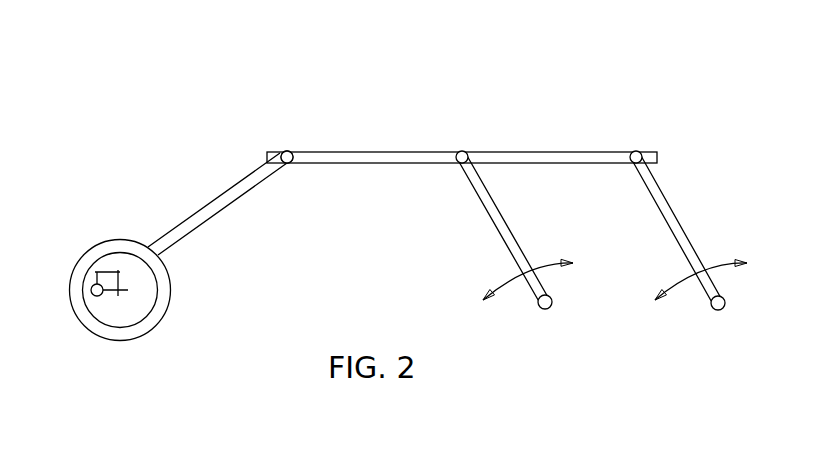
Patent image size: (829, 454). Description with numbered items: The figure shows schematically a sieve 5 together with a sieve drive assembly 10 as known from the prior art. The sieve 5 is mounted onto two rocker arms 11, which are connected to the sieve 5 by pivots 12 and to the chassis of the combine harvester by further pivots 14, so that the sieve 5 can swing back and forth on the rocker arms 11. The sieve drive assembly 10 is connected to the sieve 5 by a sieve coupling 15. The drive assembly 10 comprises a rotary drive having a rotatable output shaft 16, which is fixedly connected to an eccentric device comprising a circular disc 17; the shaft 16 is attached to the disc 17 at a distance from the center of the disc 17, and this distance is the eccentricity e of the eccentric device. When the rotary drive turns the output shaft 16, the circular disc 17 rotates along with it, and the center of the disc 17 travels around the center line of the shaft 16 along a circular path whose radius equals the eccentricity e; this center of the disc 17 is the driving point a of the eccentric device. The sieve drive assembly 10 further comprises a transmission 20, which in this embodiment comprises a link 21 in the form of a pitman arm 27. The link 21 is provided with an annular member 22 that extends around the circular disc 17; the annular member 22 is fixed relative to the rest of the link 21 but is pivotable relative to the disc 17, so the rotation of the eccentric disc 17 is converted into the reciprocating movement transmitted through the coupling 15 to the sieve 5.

The sieve drive assembly 10 is at (207, 85).
The sieve 5 is at (578, 155).
The rocker arms 11 is at (507, 248).
The pivots 12 is at (463, 150).
The pivots 14 is at (538, 305).
The sieve coupling 15 is at (288, 150).
The rotatable output shaft 16 is at (91, 296).
The circular disc 17 is at (140, 313).
The transmission 20 is at (225, 225).
The link 21 is at (210, 205).
The annular member 22 is at (130, 245).
The pitman arm 27 is at (244, 158).
The driving point a is at (117, 296).
The eccentricity e is at (108, 271).